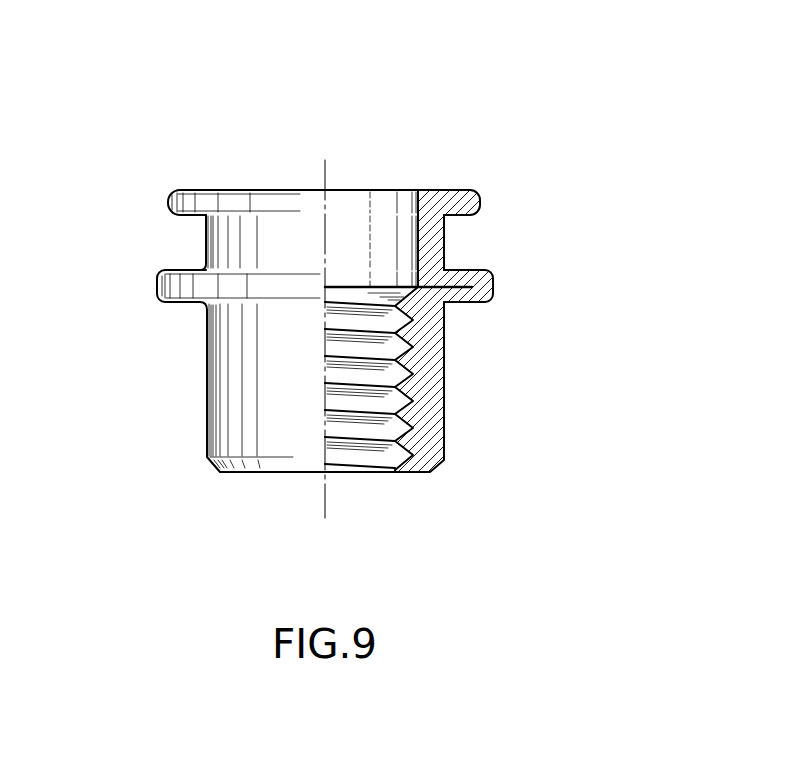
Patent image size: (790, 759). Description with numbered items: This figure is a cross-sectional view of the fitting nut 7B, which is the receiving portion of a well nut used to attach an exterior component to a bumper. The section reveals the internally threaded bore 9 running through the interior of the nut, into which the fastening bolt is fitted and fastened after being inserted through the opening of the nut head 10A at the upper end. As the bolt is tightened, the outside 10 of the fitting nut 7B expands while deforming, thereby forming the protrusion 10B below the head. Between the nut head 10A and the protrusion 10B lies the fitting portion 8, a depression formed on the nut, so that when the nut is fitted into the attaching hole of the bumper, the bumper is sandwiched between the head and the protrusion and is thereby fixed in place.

The fitting nut 7B is at (413, 143).
The fitting portion 8 is at (203, 248).
The internally threaded bore 9 is at (405, 330).
The outside 10 is at (428, 385).
The nut head 10A is at (485, 202).
The protrusion 10B is at (495, 293).